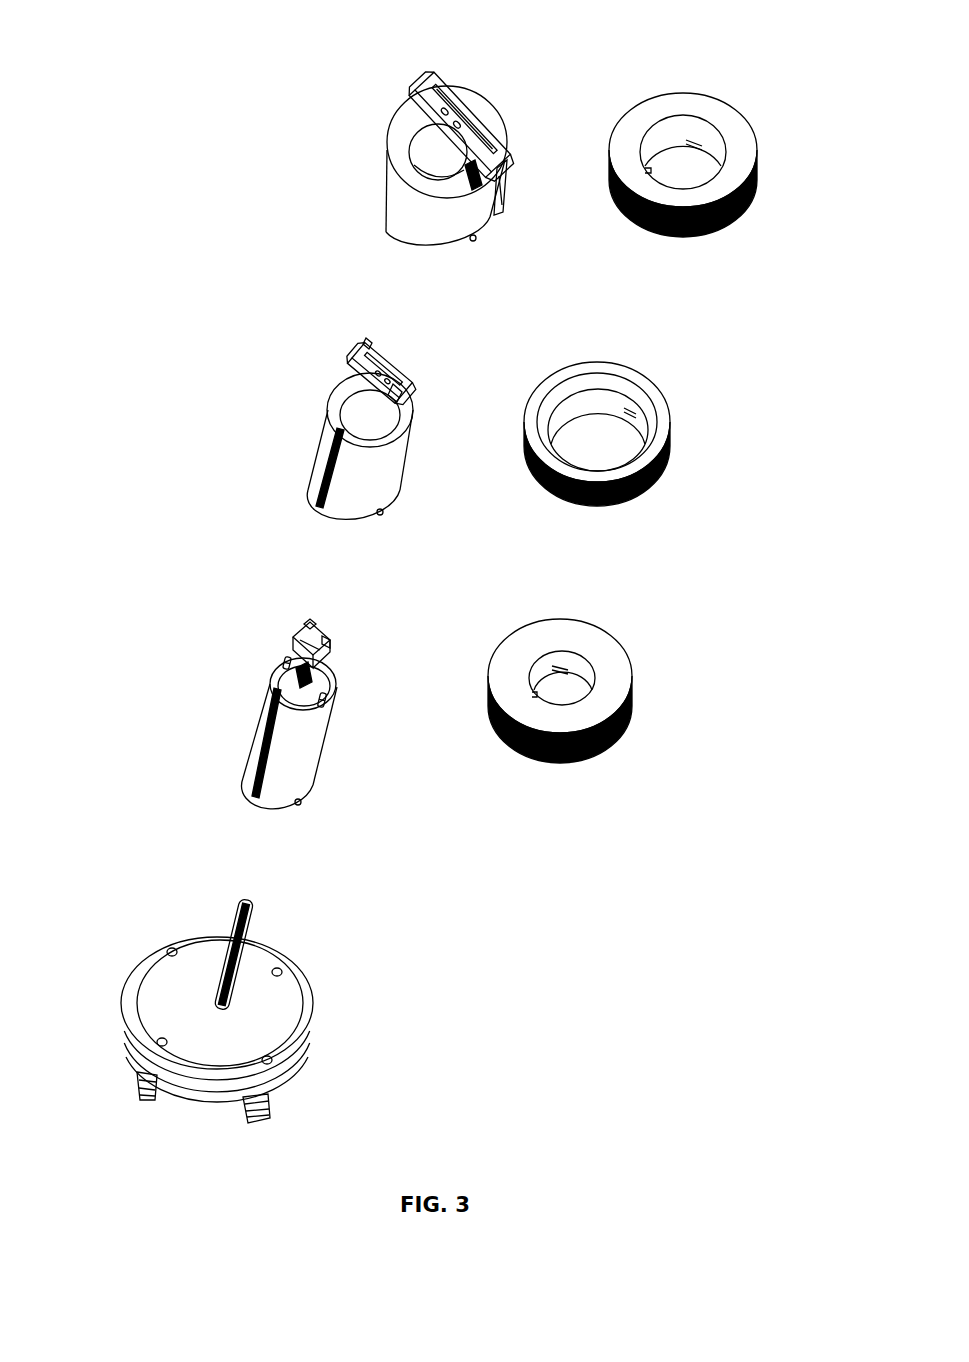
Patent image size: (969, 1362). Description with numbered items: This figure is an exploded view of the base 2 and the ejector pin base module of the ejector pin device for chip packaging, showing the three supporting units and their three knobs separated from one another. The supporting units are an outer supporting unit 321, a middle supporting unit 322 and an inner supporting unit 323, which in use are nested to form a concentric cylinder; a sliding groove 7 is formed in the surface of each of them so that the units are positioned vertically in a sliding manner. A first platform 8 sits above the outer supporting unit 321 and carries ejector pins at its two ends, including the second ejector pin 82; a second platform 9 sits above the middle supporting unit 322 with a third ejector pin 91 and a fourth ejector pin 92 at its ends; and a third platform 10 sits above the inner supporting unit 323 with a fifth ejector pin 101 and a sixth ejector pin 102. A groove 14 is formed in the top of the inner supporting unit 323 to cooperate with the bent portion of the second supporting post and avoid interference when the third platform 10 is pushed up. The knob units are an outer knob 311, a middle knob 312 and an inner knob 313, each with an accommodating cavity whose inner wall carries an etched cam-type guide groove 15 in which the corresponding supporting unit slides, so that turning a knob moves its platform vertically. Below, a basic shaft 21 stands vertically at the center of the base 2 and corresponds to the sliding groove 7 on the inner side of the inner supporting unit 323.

The base 2 is at (140, 980).
The basic shaft 21 is at (230, 942).
The sliding groove 7 is at (480, 187).
The first platform 8 is at (457, 110).
The second ejector pin 82 is at (480, 137).
The second platform 9 is at (353, 362).
The third ejector pin 91 is at (370, 342).
The fourth ejector pin 92 is at (393, 387).
The third platform 10 is at (310, 648).
The fifth ejector pin 101 is at (307, 625).
The sixth ejector pin 102 is at (323, 640).
The groove 14 is at (287, 663).
The guide groove 15 is at (690, 143).
The outer knob 311 is at (733, 217).
The middle knob 312 is at (640, 490).
The inner knob 313 is at (617, 740).
The outer supporting unit 321 is at (380, 143).
The middle supporting unit 322 is at (277, 408).
The inner supporting unit 323 is at (230, 752).